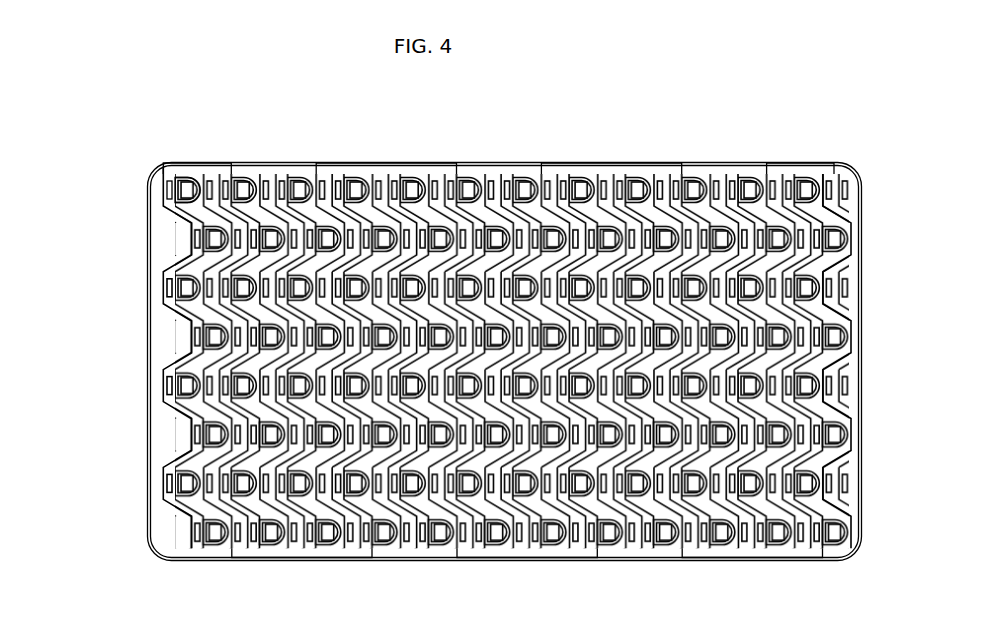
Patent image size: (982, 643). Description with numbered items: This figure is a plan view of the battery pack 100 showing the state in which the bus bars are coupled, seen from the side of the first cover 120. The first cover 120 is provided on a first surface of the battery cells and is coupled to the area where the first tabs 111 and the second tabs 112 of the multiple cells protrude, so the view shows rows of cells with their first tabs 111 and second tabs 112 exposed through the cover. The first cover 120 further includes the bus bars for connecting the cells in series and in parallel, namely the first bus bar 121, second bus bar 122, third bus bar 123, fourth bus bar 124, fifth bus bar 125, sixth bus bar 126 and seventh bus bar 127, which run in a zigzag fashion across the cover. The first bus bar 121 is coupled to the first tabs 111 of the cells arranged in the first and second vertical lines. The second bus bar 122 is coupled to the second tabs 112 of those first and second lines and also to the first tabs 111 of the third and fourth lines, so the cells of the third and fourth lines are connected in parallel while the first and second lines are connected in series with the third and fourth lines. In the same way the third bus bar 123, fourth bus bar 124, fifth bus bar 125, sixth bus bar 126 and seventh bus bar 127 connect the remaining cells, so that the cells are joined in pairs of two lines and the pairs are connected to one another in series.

The battery pack 100 is at (94, 139).
The first tab 111 is at (169, 181).
The second tab 112 is at (208, 180).
The first cover 120 is at (842, 172).
The first bus bar 121 is at (224, 165).
The second bus bar 122 is at (303, 548).
The third bus bar 123 is at (387, 176).
The fourth bus bar 124 is at (533, 548).
The fifth bus bar 125 is at (611, 176).
The sixth bus bar 126 is at (752, 548).
The seventh bus bar 127 is at (797, 165).